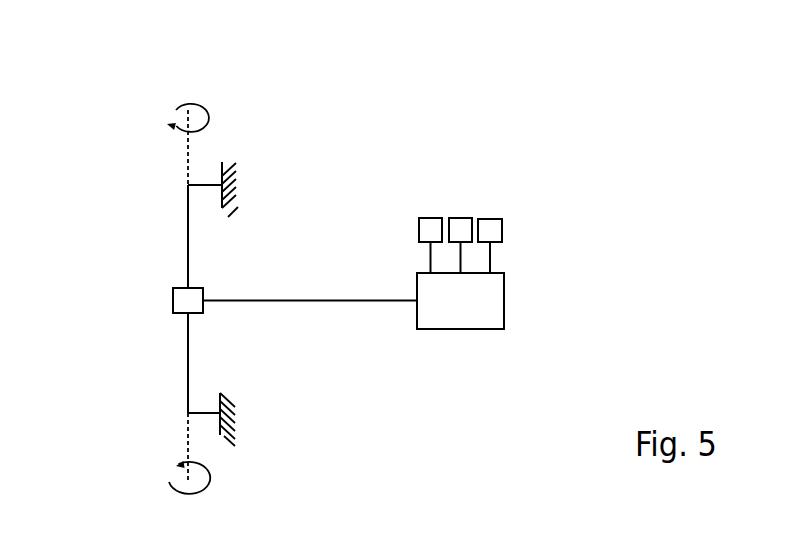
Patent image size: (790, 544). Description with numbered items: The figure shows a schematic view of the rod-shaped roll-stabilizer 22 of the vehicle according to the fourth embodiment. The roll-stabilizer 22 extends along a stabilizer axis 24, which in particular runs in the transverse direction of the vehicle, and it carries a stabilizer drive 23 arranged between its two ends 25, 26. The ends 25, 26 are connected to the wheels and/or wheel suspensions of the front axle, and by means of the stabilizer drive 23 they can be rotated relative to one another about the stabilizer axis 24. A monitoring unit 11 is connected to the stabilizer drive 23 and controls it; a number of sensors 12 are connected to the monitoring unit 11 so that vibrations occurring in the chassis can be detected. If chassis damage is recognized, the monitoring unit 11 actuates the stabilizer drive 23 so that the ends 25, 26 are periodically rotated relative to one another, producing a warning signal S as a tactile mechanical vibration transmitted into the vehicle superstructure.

The monitoring unit 11 is at (499, 306).
The sensor 12 is at (433, 224).
The roll-stabilizer 22 is at (152, 240).
The stabilizer drive 23 is at (173, 299).
The stabilizer axis 24 is at (188, 146).
The end of the roll-stabilizer 25 is at (180, 417).
The end of the roll-stabilizer 26 is at (181, 182).
The warning signal S is at (204, 108).